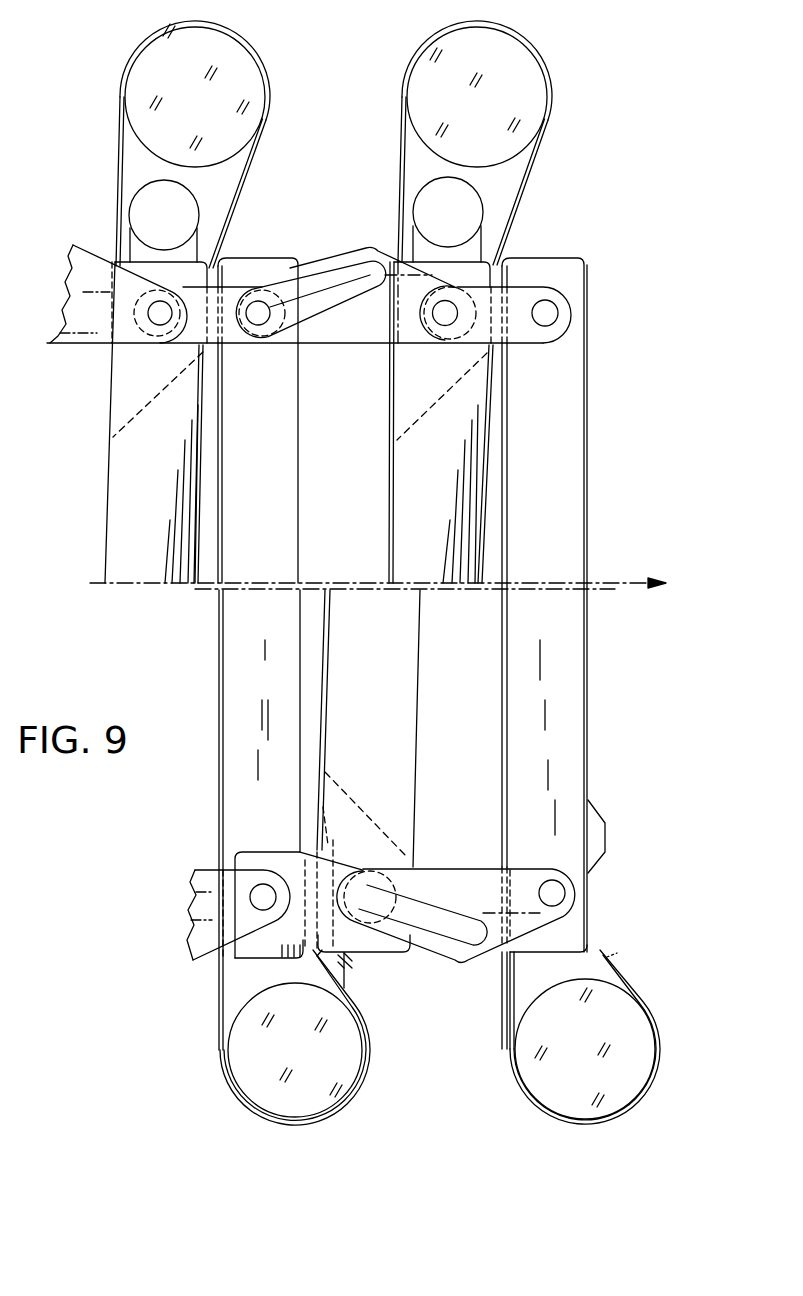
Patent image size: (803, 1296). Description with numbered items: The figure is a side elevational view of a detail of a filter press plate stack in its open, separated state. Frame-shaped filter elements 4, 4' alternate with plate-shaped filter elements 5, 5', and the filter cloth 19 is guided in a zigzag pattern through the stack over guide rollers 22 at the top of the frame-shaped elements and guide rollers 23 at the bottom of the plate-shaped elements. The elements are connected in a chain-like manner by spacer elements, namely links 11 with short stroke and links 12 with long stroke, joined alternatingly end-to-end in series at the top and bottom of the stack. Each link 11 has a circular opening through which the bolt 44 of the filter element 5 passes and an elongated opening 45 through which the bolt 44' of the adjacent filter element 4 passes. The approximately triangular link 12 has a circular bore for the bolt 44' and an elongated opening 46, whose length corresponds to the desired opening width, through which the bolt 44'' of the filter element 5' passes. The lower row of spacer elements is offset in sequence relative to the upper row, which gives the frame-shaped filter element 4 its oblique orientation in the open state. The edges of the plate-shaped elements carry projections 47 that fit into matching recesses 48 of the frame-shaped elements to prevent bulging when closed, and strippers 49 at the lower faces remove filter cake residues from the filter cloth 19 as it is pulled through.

The guide roller 22 is at (515, 57).
The filter cloth 19 is at (532, 152).
The frame-shaped filter element 4 is at (444, 531).
The frame-shaped filter element 4' is at (156, 422).
The plate-shaped filter element 5 is at (553, 653).
The plate-shaped filter element 5' is at (259, 555).
The link with short stroke 11 is at (522, 320).
The link with long stroke 12 is at (334, 262).
The elongated opening 46 is at (378, 265).
The bolt 44 is at (586, 603).
The bolt 44' is at (402, 317).
The bolt 44'' is at (209, 344).
The elongated opening 45 is at (458, 326).
The projection 47 is at (313, 828).
The recess 48 is at (328, 822).
The stripper 49 is at (347, 980).
The guide roller 23 is at (252, 1088).